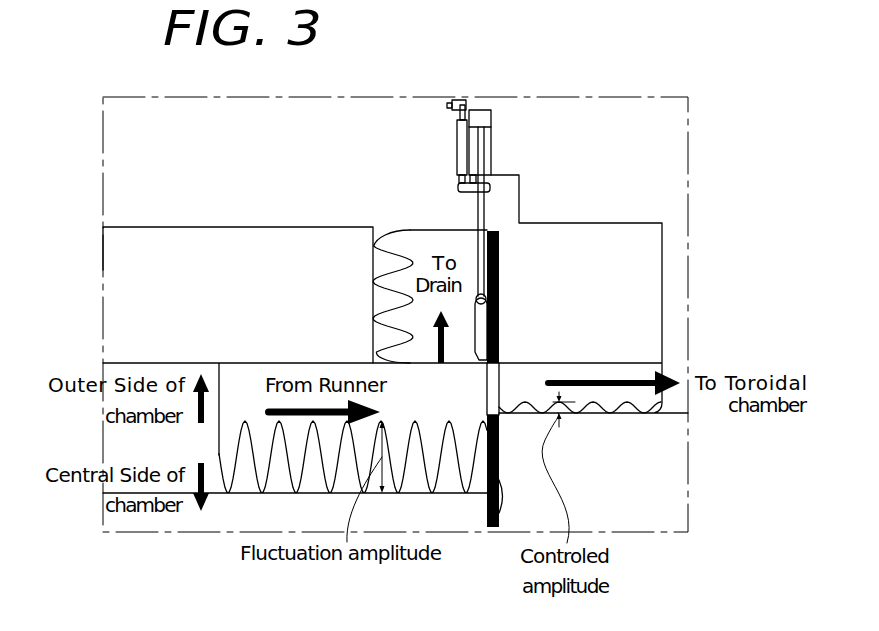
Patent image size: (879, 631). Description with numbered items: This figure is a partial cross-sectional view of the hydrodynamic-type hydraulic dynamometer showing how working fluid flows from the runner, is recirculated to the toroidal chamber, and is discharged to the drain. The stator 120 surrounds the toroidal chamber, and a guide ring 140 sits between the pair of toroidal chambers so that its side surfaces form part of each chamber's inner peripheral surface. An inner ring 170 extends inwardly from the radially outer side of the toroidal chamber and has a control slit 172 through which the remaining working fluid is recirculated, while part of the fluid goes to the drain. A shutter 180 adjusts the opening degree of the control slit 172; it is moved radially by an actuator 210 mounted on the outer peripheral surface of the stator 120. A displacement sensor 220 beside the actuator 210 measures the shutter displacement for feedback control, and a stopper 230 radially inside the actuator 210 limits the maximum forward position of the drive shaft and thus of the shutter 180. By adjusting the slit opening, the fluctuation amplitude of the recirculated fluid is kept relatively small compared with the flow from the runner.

The stator 120 is at (645, 255).
The guide ring 140 is at (137, 291).
The inner ring 170 is at (490, 528).
The control slit 172 is at (490, 385).
The shutter 180 is at (478, 306).
The actuator 210 is at (487, 110).
The displacement sensor 220 is at (462, 150).
The stopper 230 is at (457, 186).